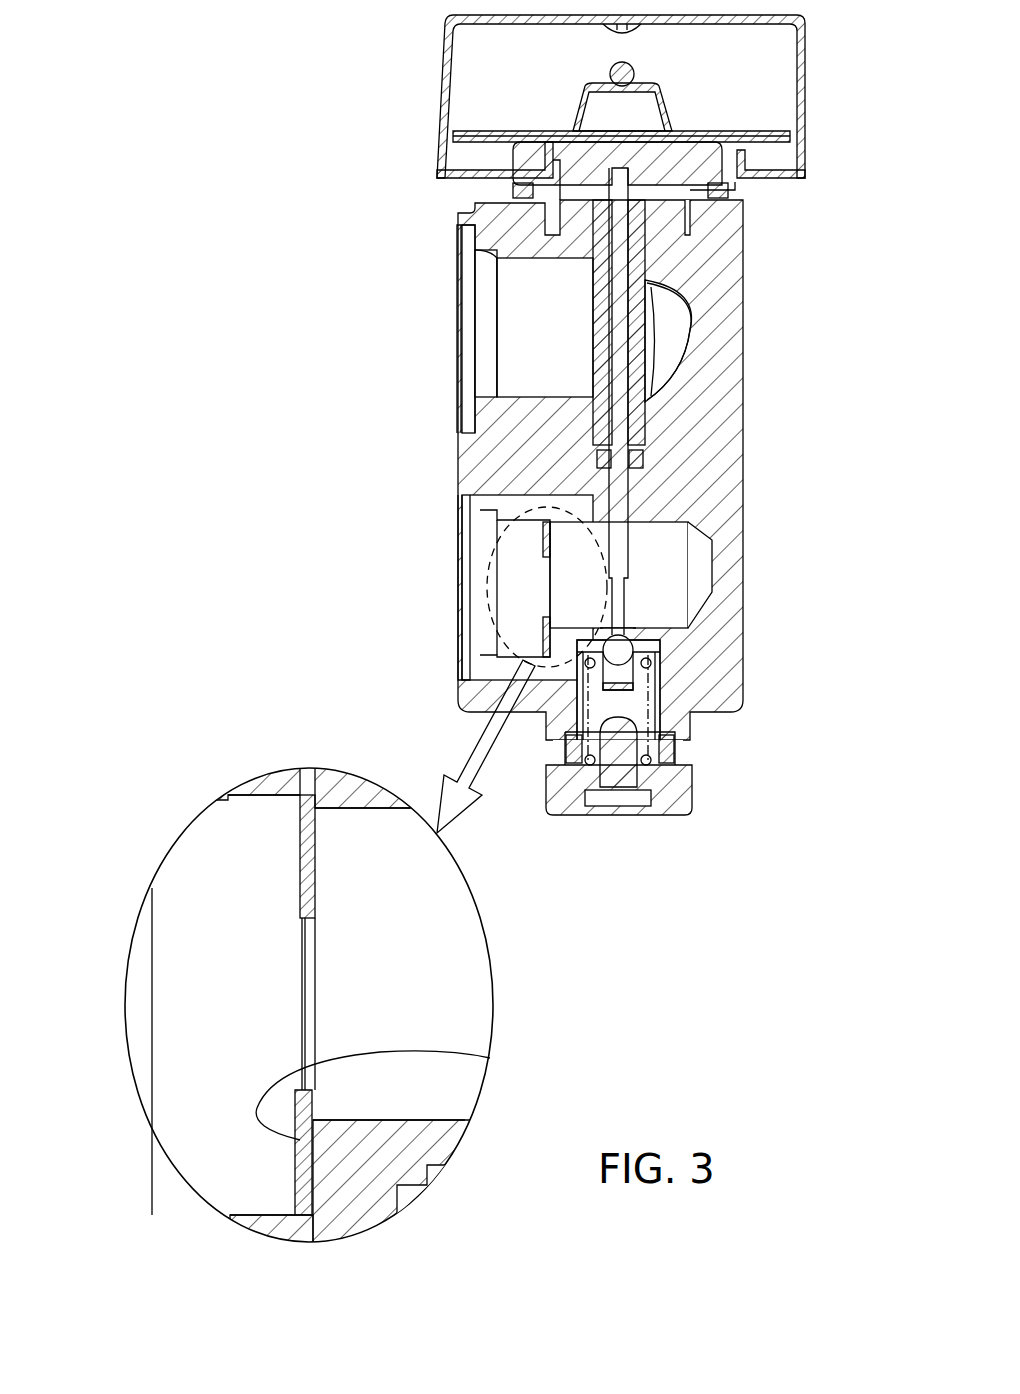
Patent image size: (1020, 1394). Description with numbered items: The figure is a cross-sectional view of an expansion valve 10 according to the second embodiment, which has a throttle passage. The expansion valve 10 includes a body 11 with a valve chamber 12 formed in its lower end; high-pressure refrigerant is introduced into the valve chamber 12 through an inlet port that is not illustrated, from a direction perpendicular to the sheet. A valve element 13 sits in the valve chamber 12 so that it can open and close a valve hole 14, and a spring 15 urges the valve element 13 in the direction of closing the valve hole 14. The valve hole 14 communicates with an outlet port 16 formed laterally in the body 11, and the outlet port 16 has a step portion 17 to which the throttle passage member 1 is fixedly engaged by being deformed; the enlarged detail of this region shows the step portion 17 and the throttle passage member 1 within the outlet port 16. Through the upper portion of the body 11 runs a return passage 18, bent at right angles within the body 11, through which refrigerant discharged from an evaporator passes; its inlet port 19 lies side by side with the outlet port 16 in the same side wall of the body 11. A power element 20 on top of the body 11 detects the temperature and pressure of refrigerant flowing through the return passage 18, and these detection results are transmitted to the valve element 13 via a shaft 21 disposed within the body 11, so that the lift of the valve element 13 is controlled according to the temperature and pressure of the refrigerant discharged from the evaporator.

The throttle passage member 1 is at (320, 935).
The expansion valve 10 is at (760, 247).
The body 11 is at (458, 463).
The valve chamber 12 is at (620, 705).
The valve element 13 is at (620, 660).
The valve hole 14 is at (626, 632).
The spring 15 is at (650, 717).
The outlet port 16 is at (480, 636).
The step portion 17 is at (490, 1058).
The return passage 18 is at (676, 348).
The inlet port 19 is at (487, 327).
The power element 20 is at (517, 114).
The shaft 21 is at (623, 483).